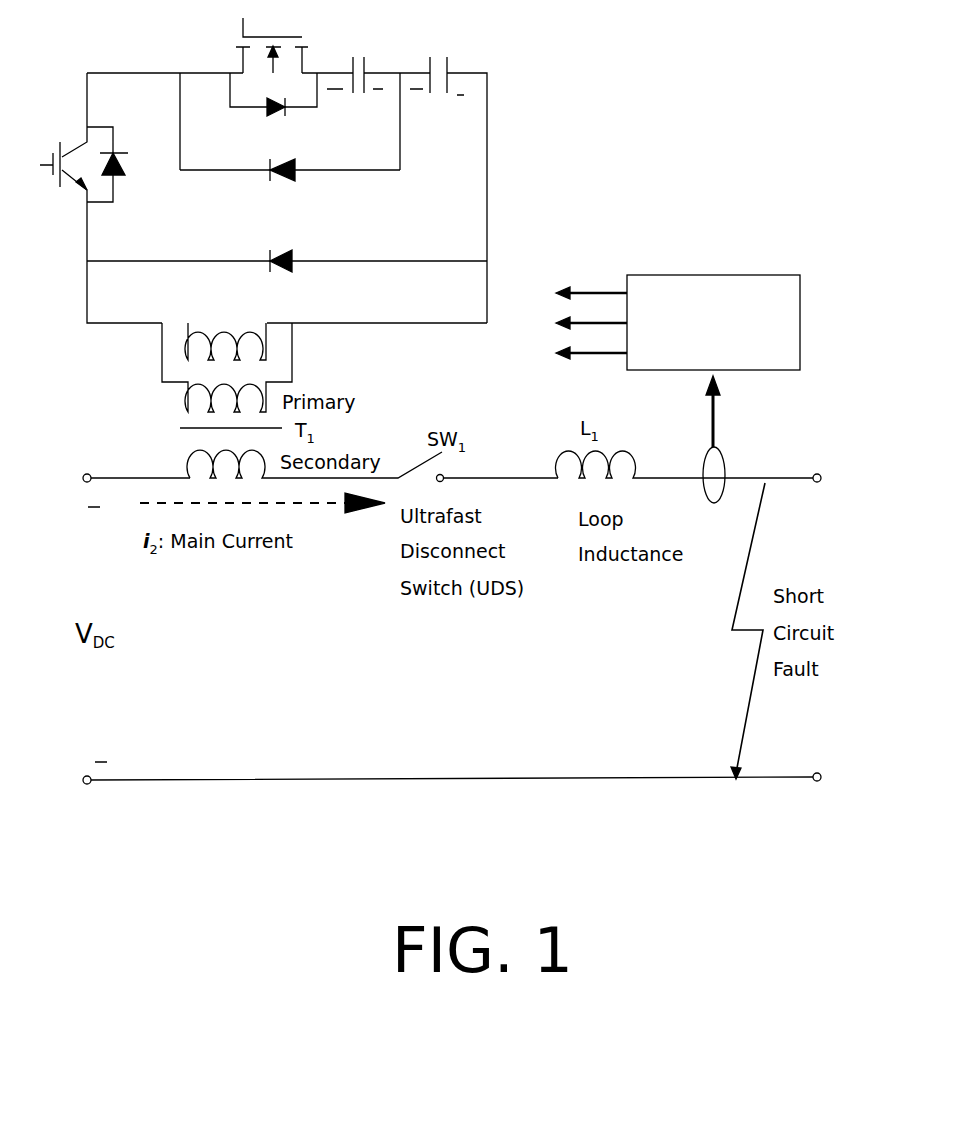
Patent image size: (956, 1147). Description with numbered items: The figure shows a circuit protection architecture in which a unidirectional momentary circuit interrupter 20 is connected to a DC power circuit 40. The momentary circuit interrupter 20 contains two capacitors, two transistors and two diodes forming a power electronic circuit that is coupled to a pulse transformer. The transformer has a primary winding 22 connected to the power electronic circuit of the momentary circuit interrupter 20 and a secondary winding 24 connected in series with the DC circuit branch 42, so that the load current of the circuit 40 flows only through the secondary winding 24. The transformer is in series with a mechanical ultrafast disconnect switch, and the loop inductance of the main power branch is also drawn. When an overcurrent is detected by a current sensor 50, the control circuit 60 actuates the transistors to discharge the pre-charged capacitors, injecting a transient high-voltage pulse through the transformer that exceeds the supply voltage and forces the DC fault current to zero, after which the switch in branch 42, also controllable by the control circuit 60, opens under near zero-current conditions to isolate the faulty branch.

The momentary circuit interrupter 20 is at (558, 117).
The primary winding 22 is at (186, 411).
The secondary winding 24 is at (186, 443).
The DC power circuit 40 is at (212, 808).
The DC circuit branch 42 is at (113, 478).
The current sensor 50 is at (714, 439).
The control circuit 60 is at (800, 338).